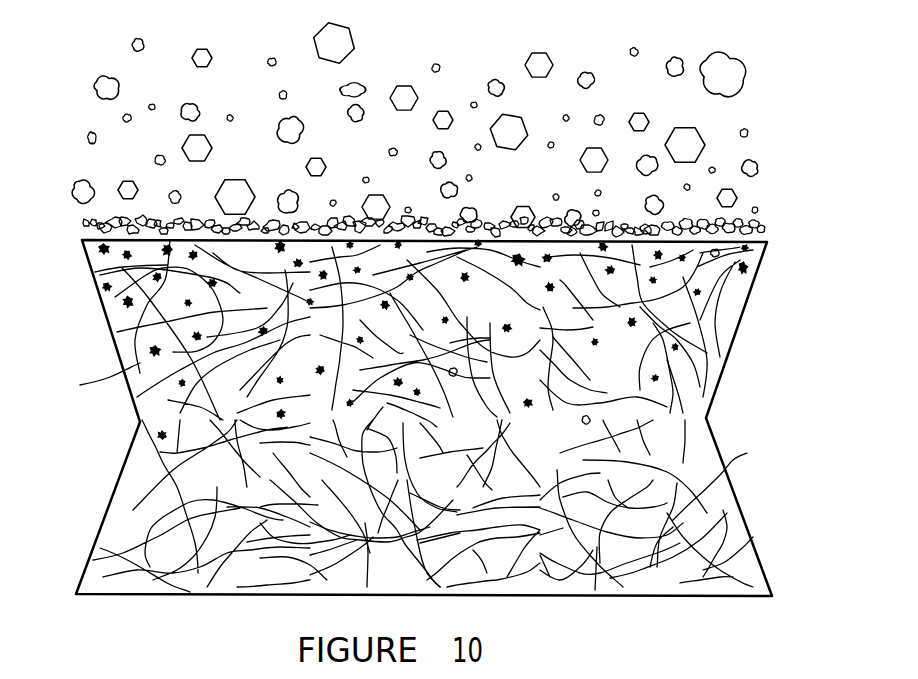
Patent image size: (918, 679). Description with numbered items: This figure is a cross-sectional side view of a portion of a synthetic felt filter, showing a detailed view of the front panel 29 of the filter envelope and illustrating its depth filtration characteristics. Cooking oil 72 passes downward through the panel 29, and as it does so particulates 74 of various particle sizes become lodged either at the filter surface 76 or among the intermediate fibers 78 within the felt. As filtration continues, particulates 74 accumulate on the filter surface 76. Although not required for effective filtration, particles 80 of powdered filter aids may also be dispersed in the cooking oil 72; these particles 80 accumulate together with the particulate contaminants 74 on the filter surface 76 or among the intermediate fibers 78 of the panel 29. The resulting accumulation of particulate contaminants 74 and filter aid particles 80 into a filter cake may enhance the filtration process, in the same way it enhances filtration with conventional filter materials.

The front panel 29 is at (812, 235).
The cooking oil 72 is at (248, 107).
The particulates 74 is at (92, 177).
The filter surface 76 is at (771, 236).
The intermediate fibers 78 is at (135, 324).
The particles of powdered filter aids 80 is at (560, 58).